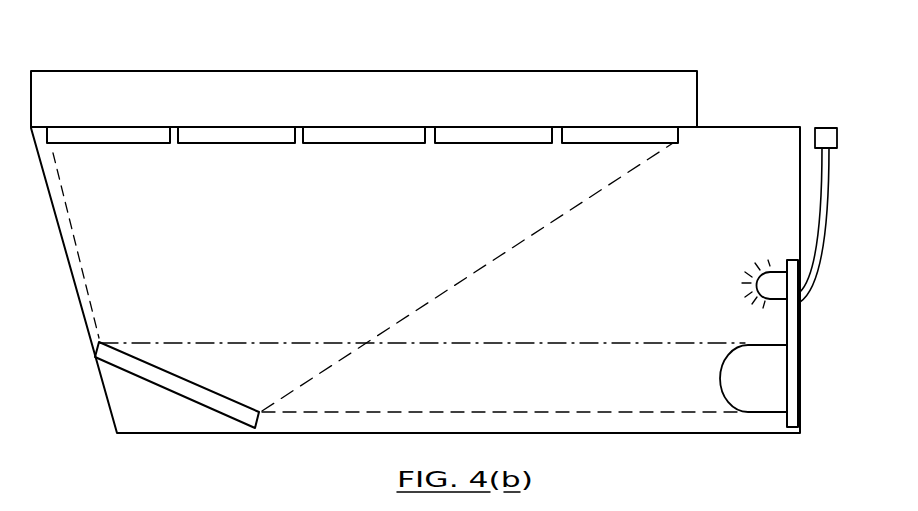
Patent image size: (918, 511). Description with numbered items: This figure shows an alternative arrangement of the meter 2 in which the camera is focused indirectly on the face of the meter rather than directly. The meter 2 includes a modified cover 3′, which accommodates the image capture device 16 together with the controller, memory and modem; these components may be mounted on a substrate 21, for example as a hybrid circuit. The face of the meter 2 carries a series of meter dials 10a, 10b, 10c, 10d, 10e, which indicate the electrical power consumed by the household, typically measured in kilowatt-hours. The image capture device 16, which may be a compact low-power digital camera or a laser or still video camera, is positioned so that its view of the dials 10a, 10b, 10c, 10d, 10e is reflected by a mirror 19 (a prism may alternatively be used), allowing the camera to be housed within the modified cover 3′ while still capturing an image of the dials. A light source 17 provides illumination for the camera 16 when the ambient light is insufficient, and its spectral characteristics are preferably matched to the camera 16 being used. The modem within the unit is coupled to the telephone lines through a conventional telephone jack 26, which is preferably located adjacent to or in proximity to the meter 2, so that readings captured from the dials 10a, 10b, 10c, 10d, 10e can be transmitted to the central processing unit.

The color filter unit 2 is at (670, 62).
The housing 3′ is at (723, 126).
The color filter 10a is at (100, 138).
The color filter 10b is at (220, 138).
The color filter 10c is at (344, 138).
The color filter 10d is at (478, 138).
The color filter 10e is at (597, 138).
The photodetector 16 is at (728, 378).
The light emitting diode 17 is at (767, 281).
The mirror 19 is at (193, 389).
The circuit board 21 is at (797, 327).
The output cable 26 is at (827, 120).